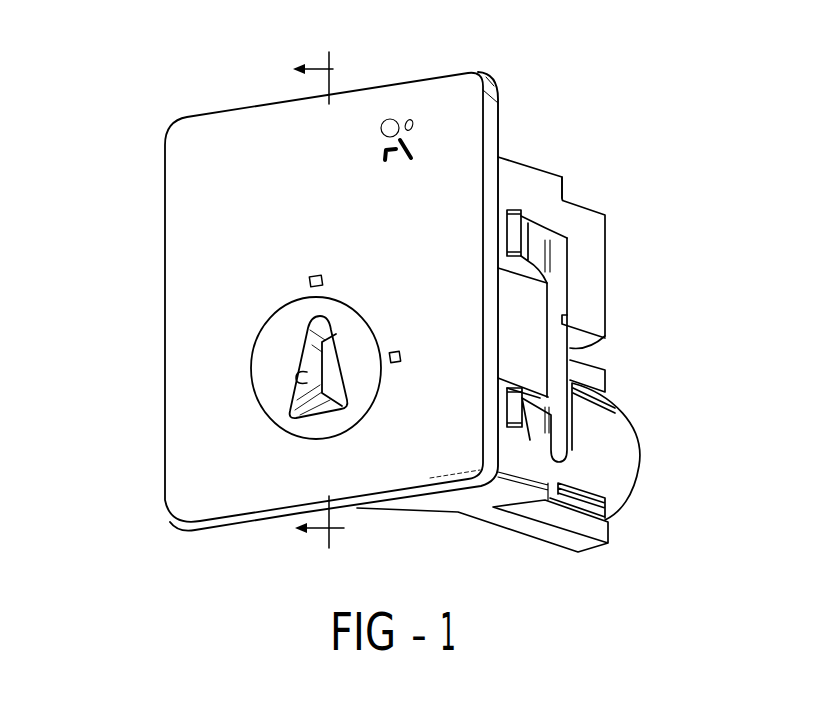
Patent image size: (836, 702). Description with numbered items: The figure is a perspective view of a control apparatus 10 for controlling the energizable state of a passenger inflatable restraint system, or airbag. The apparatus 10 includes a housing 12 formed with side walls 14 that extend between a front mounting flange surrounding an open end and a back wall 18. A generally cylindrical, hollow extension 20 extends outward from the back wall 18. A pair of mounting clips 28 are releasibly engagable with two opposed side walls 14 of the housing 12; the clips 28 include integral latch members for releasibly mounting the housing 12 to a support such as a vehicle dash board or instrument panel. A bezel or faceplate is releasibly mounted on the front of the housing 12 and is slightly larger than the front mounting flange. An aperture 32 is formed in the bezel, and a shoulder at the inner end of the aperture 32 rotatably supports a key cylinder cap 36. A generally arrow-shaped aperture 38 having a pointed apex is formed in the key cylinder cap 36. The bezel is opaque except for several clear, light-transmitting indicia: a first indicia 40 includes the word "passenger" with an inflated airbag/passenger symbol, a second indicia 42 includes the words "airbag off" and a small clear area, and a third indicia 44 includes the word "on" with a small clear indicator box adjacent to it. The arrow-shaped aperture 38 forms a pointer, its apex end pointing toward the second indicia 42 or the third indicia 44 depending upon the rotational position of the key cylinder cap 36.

The control apparatus 10 is at (133, 60).
The housing 12 is at (532, 173).
The side walls 14 is at (524, 458).
The back wall 18 is at (563, 188).
The hollow extension 20 is at (627, 438).
The mounting clips 28 is at (540, 256).
The aperture 32 is at (275, 418).
The key cylinder cap 36 is at (267, 345).
The arrow-shaped aperture 38 is at (298, 378).
The first indicia 40 is at (215, 162).
The second indicia 42 is at (235, 256).
The third indicia 44 is at (423, 372).